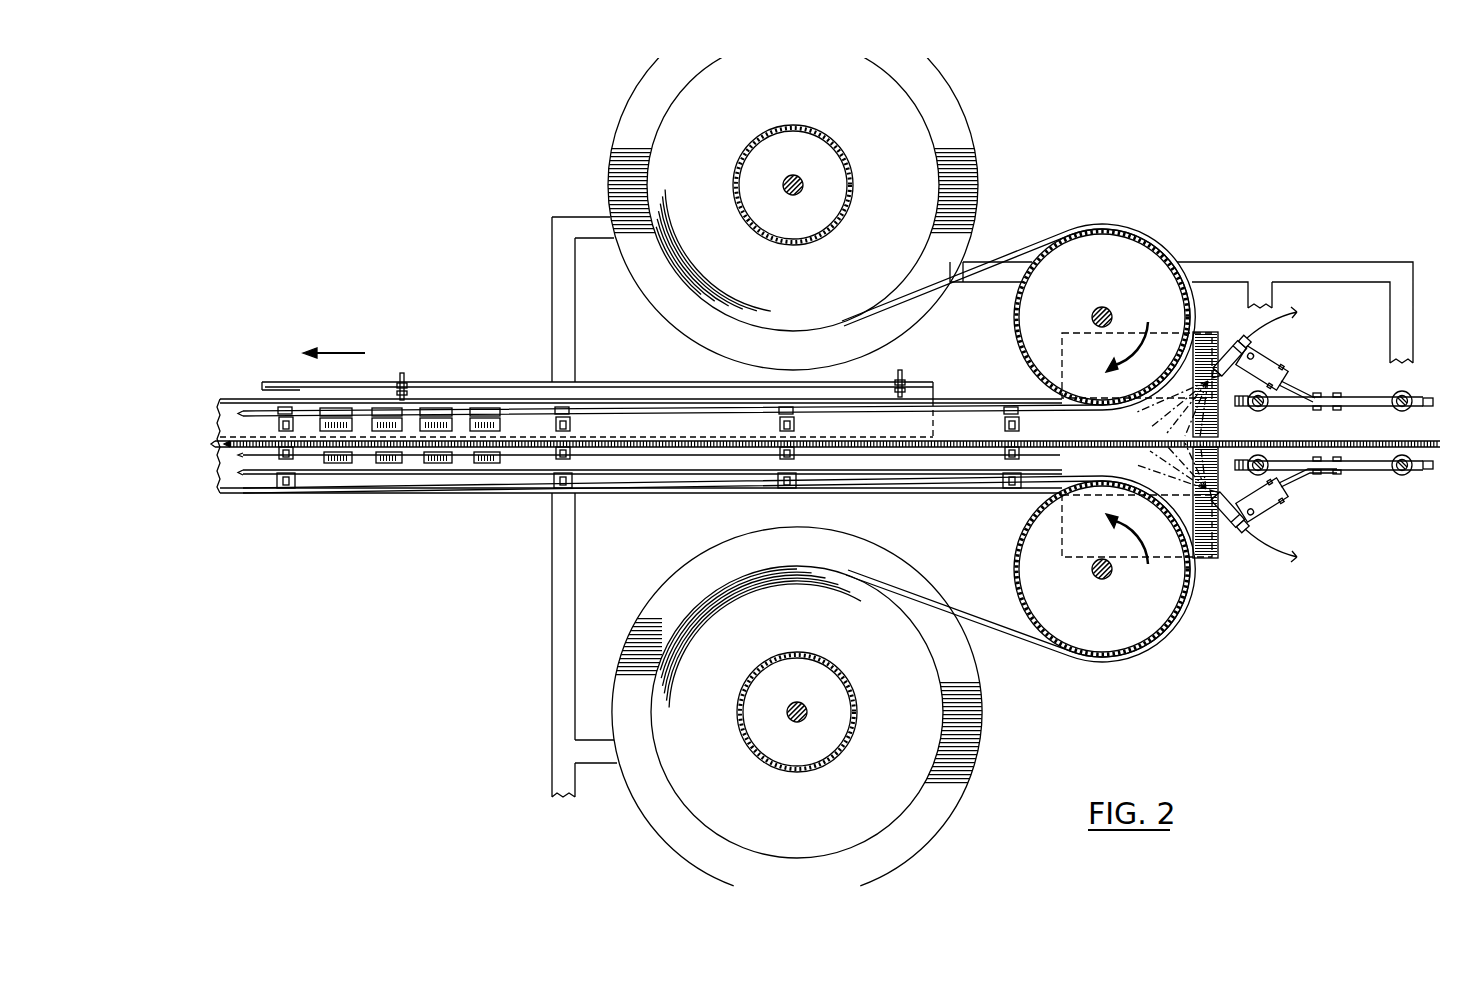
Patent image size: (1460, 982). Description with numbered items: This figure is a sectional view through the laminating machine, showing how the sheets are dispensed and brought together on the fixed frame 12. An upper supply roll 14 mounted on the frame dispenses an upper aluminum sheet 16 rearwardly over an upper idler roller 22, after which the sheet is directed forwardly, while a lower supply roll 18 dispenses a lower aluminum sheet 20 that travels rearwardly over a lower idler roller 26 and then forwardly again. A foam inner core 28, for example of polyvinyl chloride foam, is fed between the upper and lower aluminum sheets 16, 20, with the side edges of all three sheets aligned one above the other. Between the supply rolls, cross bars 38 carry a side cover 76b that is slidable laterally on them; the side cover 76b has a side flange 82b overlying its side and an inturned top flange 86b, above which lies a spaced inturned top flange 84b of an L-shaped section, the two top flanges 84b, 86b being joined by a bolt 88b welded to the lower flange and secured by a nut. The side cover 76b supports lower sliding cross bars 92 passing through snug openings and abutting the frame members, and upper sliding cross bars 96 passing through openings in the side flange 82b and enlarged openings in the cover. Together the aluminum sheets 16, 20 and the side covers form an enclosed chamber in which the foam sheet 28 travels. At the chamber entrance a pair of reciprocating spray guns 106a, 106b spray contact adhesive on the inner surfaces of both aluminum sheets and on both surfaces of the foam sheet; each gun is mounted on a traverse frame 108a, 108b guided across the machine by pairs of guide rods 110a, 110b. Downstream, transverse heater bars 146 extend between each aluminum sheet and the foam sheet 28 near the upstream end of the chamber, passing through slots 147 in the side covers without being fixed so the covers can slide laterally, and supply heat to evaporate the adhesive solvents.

The fixed frame 12 is at (1259, 244).
The upper supply roll 14 is at (955, 125).
The upper aluminum sheet 16 is at (1018, 252).
The lower supply roll 18 is at (970, 702).
The lower aluminum sheet 20 is at (1000, 630).
The upper idler roller 22 is at (1144, 247).
The lower guide roller 26 is at (1163, 602).
The foam inner core 28 is at (253, 440).
The cross bars 38 is at (566, 462).
The side cover 76b is at (937, 395).
The side flange 82b is at (628, 388).
The inturned top flange 84b is at (595, 380).
The inturned top flange 86b is at (684, 398).
The bolt 88b is at (905, 372).
The lower sliding cross bars 92 is at (553, 492).
The upper sliding cross bars 96 is at (567, 432).
The reciprocating spray gun 106a is at (1273, 354).
The reciprocating spray gun 106b is at (1277, 515).
The traverse frame 108a is at (1362, 397).
The traverse frame 108b is at (1367, 472).
The guide rods 110a is at (1397, 410).
The guide rods 110b is at (1400, 477).
The transverse heater bars 146 is at (433, 420).
The slots 147 is at (483, 420).